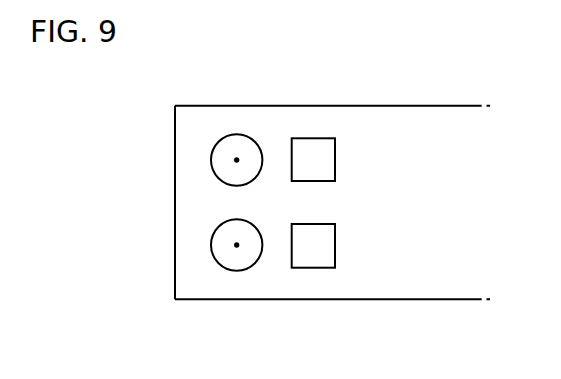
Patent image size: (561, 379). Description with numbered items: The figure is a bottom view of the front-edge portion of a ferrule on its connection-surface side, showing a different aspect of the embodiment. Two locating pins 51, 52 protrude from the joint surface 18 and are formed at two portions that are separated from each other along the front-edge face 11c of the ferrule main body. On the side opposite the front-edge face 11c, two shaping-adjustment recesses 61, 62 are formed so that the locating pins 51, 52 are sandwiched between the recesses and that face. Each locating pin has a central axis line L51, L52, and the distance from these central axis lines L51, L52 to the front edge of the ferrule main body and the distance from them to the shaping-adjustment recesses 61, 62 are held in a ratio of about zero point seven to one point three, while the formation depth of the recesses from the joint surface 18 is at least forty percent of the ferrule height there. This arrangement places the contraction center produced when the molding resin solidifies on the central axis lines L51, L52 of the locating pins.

The joint surface 18 is at (193, 213).
The front-edge face 11c is at (175, 287).
The locating pin 51 is at (235, 133).
The locating pin 52 is at (245, 270).
The shaping-adjustment recess 61 is at (315, 148).
The shaping-adjustment recess 62 is at (320, 268).
The central axis line L51 is at (236, 160).
The central axis line L52 is at (236, 245).